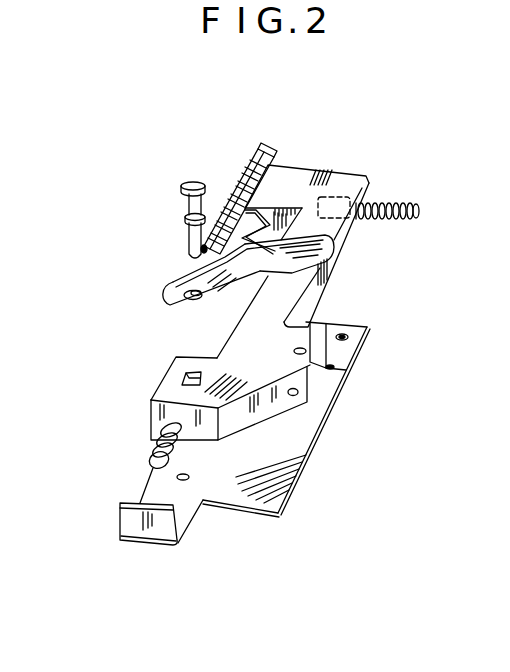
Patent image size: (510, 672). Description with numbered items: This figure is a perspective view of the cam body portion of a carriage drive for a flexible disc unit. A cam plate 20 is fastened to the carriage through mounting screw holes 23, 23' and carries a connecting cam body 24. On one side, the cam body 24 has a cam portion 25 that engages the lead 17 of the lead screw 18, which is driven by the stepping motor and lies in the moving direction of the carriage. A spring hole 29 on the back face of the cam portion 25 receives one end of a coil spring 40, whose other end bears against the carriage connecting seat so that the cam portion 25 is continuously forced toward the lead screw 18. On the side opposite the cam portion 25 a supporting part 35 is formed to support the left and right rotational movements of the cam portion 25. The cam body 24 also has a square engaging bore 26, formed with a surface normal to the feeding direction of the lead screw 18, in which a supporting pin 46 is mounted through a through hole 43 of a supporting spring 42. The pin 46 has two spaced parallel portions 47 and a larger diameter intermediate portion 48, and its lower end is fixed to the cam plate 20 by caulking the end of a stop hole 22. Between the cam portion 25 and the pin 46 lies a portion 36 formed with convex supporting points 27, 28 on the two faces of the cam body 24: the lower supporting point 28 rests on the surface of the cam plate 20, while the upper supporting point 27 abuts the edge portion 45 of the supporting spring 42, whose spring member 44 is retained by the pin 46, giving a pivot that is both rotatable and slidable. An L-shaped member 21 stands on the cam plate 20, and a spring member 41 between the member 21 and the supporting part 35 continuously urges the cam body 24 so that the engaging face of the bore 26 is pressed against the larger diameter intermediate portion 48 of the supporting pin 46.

The lead 17 is at (250, 162).
The lead screw 18 is at (262, 150).
The cam plate 20 is at (305, 470).
The L-shaped member 21 is at (118, 502).
The stop hole 22 is at (177, 478).
The mounting screw hole 23 is at (358, 384).
The mounting screw hole 23' is at (374, 349).
The connecting cam body 24 is at (347, 173).
The cam portion 25 is at (232, 193).
The square engaging bore 26 is at (185, 372).
The upper supporting point 27 is at (308, 322).
The lower supporting point 28 is at (303, 367).
The spring hole 29 is at (353, 216).
The supporting part 35 is at (151, 400).
The portion for supporting vertical rotational movement 36 is at (298, 392).
The coil spring 40 is at (420, 212).
The spring member 41 is at (148, 449).
The supporting spring 42 is at (190, 306).
The through hole 43 is at (184, 296).
The spring member 44 is at (300, 292).
The edge portion 45 is at (322, 245).
The supporting pin 46 is at (182, 185).
The parallel portions 47 is at (185, 208).
The larger diameter intermediate portion 48 is at (188, 217).